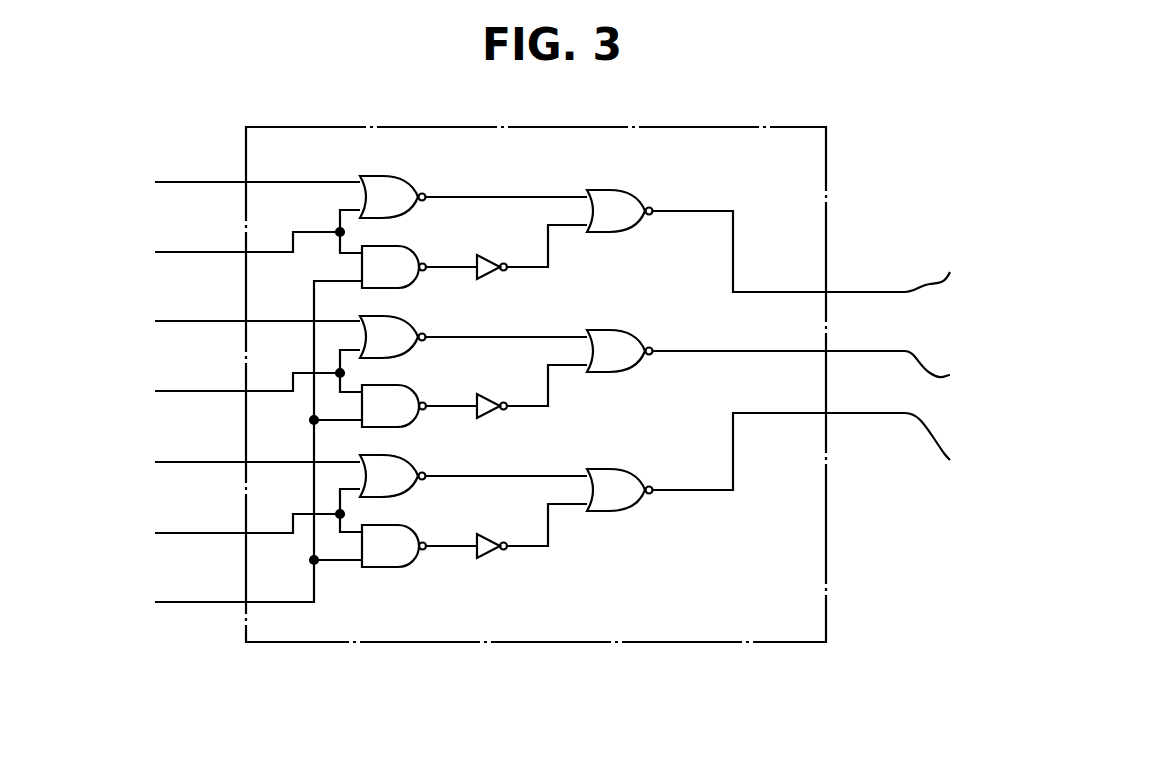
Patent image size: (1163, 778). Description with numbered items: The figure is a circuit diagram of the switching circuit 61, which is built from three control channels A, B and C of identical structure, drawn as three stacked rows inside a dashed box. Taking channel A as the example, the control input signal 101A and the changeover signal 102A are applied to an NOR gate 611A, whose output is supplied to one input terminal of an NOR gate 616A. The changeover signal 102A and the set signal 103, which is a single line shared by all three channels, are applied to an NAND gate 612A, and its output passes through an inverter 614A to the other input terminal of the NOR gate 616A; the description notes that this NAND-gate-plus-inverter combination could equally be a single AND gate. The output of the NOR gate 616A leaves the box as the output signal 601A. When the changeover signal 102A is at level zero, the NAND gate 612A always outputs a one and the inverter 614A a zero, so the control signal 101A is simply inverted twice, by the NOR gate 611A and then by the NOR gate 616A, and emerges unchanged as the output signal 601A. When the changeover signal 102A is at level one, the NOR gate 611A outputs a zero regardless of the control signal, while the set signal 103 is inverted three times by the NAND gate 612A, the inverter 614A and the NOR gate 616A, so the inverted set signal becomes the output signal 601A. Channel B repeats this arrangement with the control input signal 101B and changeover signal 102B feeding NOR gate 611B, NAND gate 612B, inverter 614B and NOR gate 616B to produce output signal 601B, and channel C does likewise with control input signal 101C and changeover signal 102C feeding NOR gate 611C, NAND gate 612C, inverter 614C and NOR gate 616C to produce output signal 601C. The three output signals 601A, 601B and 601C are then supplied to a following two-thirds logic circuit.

The switching circuit 61 is at (578, 626).
The control input signal 101A is at (257, 168).
The changeover signal 102A is at (258, 231).
The control input signal 101B is at (257, 307).
The changeover signal 102B is at (258, 371).
The control input signal 101C is at (257, 448).
The changeover signal 102C is at (258, 511).
The set signal 103 is at (258, 441).
The NOR gate 611A is at (399, 177).
The NAND gate 612A is at (398, 247).
The inverter 614A is at (491, 256).
The NOR gate 616A is at (622, 190).
The output signal 601A is at (1120, 281).
The NOR gate 611B is at (402, 318).
The NAND gate 612B is at (404, 386).
The inverter 614B is at (512, 371).
The NOR gate 616B is at (621, 331).
The output signal 601B is at (1118, 386).
The NOR gate 611C is at (402, 456).
The NAND gate 612C is at (404, 526).
The inverter 614C is at (512, 509).
The NOR gate 616C is at (621, 470).
The output signal 601C is at (1118, 475).